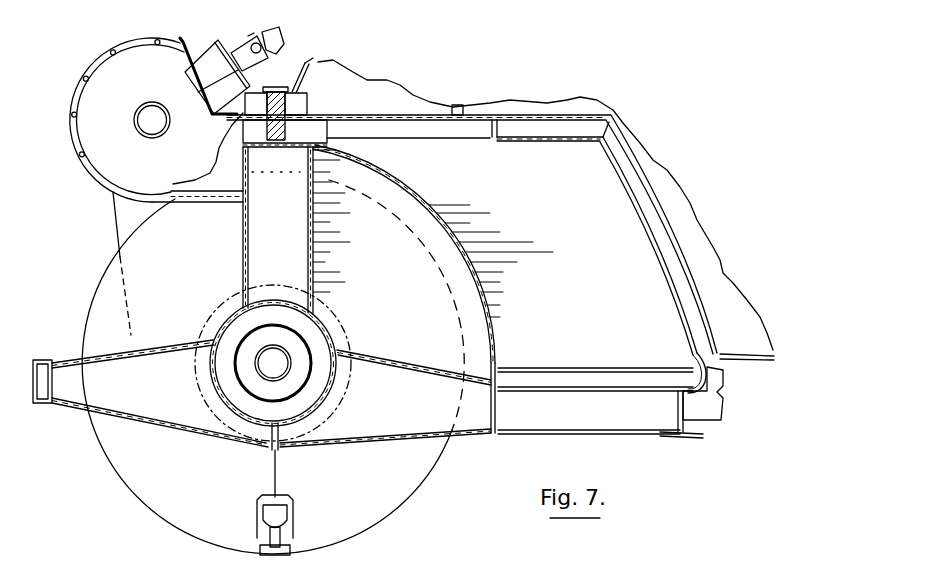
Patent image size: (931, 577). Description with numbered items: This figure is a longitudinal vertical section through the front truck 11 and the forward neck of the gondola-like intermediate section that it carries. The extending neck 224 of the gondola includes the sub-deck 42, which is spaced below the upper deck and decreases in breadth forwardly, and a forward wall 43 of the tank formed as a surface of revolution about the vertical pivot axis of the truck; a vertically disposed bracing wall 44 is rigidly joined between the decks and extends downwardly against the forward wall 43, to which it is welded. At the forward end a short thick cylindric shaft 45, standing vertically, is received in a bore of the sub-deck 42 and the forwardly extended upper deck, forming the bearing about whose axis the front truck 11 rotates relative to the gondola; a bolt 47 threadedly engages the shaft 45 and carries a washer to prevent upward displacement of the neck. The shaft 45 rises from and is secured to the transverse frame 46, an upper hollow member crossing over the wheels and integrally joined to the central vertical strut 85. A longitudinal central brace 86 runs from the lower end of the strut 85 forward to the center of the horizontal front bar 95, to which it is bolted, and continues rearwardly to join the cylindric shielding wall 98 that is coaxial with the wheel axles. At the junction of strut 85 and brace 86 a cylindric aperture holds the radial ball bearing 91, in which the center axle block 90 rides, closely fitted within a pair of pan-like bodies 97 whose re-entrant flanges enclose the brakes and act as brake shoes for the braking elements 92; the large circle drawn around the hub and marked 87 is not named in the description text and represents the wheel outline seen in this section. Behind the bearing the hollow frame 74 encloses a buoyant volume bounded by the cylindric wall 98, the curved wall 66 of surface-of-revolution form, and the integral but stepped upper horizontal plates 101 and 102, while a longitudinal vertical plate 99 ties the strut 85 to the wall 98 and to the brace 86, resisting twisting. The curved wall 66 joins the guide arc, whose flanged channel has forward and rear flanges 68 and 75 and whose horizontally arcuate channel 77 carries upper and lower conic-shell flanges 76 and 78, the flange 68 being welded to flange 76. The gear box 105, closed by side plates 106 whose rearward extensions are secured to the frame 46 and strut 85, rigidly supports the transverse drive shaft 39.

The front truck 11 is at (83, 244).
The transverse drive shaft 39 is at (138, 131).
The sub-deck 42 is at (397, 120).
The forward wall 43 is at (672, 232).
The bracing wall 44 is at (372, 98).
The cylindric shaft 45 is at (269, 103).
The transverse frame 46 is at (303, 130).
The bolt 47 is at (280, 87).
The curved wall 66 is at (694, 342).
The forward flange 68 is at (700, 367).
The front truck frame 74 is at (588, 276).
The rear flange 75 is at (710, 395).
The upper flange 76 is at (693, 387).
The horizontally arcuate channel 77 is at (680, 407).
The lower flange 78 is at (690, 437).
The central vertical strut 85 is at (278, 230).
The longitudinal central brace 86 is at (163, 342).
The wheel 87 is at (433, 458).
The center axle block 90 is at (297, 377).
The radial ball bearing 91 is at (247, 323).
The braking element 92 is at (343, 332).
The horizontal front bar 95 is at (48, 360).
The pan-like bodies 97 is at (258, 365).
The cylindric shielding wall 98 is at (440, 217).
The vertical plate 99 is at (417, 261).
The upper horizontal plate 101 is at (412, 129).
The upper horizontal plate 102 is at (577, 140).
The gear box 105 is at (165, 18).
The side plates 106 is at (103, 80).
The extending neck 224 is at (378, 61).